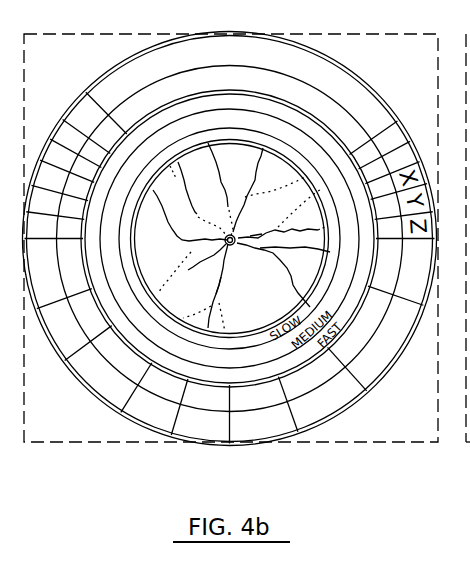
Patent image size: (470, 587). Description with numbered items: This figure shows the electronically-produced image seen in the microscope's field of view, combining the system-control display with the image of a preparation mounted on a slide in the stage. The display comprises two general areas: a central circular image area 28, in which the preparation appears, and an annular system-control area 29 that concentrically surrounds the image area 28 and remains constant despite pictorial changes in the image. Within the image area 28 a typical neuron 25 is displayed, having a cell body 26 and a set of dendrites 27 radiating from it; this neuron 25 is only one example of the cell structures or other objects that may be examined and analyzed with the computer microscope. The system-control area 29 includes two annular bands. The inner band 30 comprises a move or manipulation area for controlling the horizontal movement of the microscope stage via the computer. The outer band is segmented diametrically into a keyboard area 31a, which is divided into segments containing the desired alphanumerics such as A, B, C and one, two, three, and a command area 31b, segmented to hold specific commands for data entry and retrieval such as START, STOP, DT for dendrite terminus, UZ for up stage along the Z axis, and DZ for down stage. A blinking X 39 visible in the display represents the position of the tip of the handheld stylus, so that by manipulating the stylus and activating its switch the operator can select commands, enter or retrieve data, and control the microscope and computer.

The neuron 25 is at (228, 285).
The cell body 26 is at (233, 246).
The dendrites 27 is at (256, 236).
The central circular image area 28 is at (198, 169).
The annular system-control area 29 is at (192, 35).
The inner band 30 is at (288, 126).
The keyboard area 31a is at (70, 158).
The command area 31b is at (120, 378).
The blinking X 39 is at (276, 175).